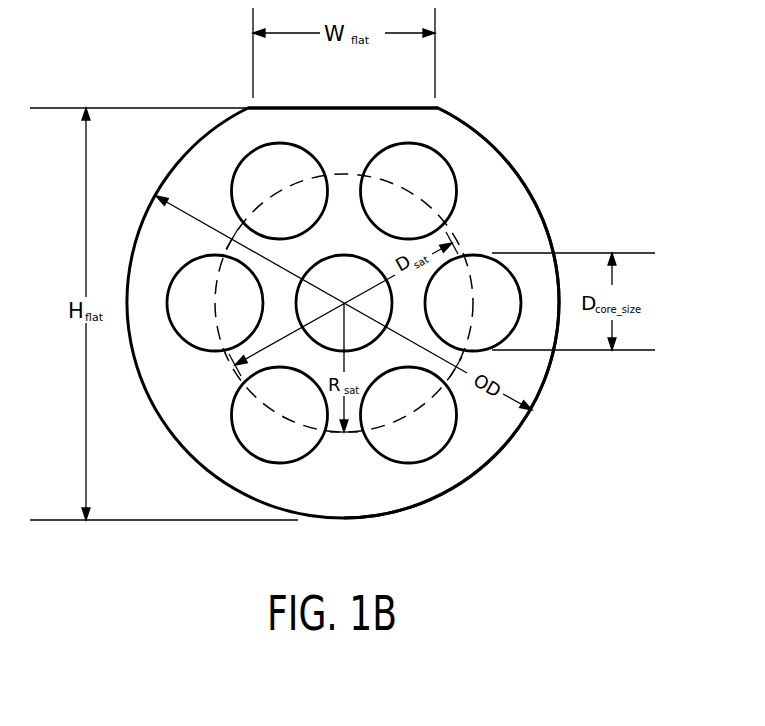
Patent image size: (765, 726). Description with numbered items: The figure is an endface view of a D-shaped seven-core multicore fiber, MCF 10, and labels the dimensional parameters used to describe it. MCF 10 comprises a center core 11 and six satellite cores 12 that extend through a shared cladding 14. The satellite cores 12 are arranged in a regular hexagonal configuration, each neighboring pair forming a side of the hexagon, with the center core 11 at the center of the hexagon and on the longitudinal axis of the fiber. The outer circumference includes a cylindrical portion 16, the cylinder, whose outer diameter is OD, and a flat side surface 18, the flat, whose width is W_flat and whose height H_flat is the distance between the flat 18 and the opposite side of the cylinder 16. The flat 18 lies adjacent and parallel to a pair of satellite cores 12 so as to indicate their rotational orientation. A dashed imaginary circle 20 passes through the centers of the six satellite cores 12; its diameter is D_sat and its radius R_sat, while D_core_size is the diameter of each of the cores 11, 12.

The multicore fiber 10 is at (519, 124).
The center core 11 is at (334, 289).
The satellite cores 12 is at (256, 183).
The cladding 14 is at (486, 226).
The cylindrical portion 16 is at (538, 187).
The flat side surface 18 is at (344, 104).
The imaginary circle 20 is at (466, 352).